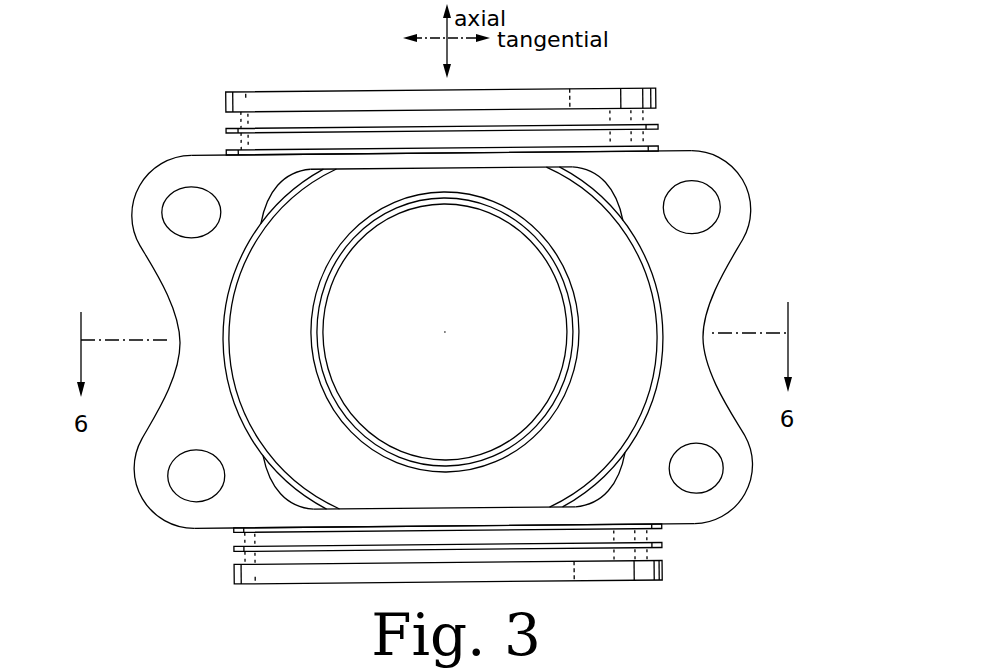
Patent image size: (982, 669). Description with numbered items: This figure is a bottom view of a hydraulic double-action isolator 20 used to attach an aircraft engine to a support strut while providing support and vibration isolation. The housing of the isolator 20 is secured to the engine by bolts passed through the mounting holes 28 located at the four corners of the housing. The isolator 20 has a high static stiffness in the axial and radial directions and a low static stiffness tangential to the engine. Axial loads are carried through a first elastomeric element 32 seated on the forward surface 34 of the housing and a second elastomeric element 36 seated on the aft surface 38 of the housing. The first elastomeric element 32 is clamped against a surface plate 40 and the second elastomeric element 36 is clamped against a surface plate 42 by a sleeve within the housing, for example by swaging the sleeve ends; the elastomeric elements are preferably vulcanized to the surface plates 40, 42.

The hydraulic double-action isolator 20 is at (437, 329).
The mounting holes 28 is at (165, 223).
The first elastomeric element 32 is at (397, 97).
The forward surface 34 is at (185, 152).
The second elastomeric element 36 is at (500, 583).
The aft surface 38 is at (699, 524).
The surface plate 40 is at (297, 100).
The surface plate 42 is at (618, 575).